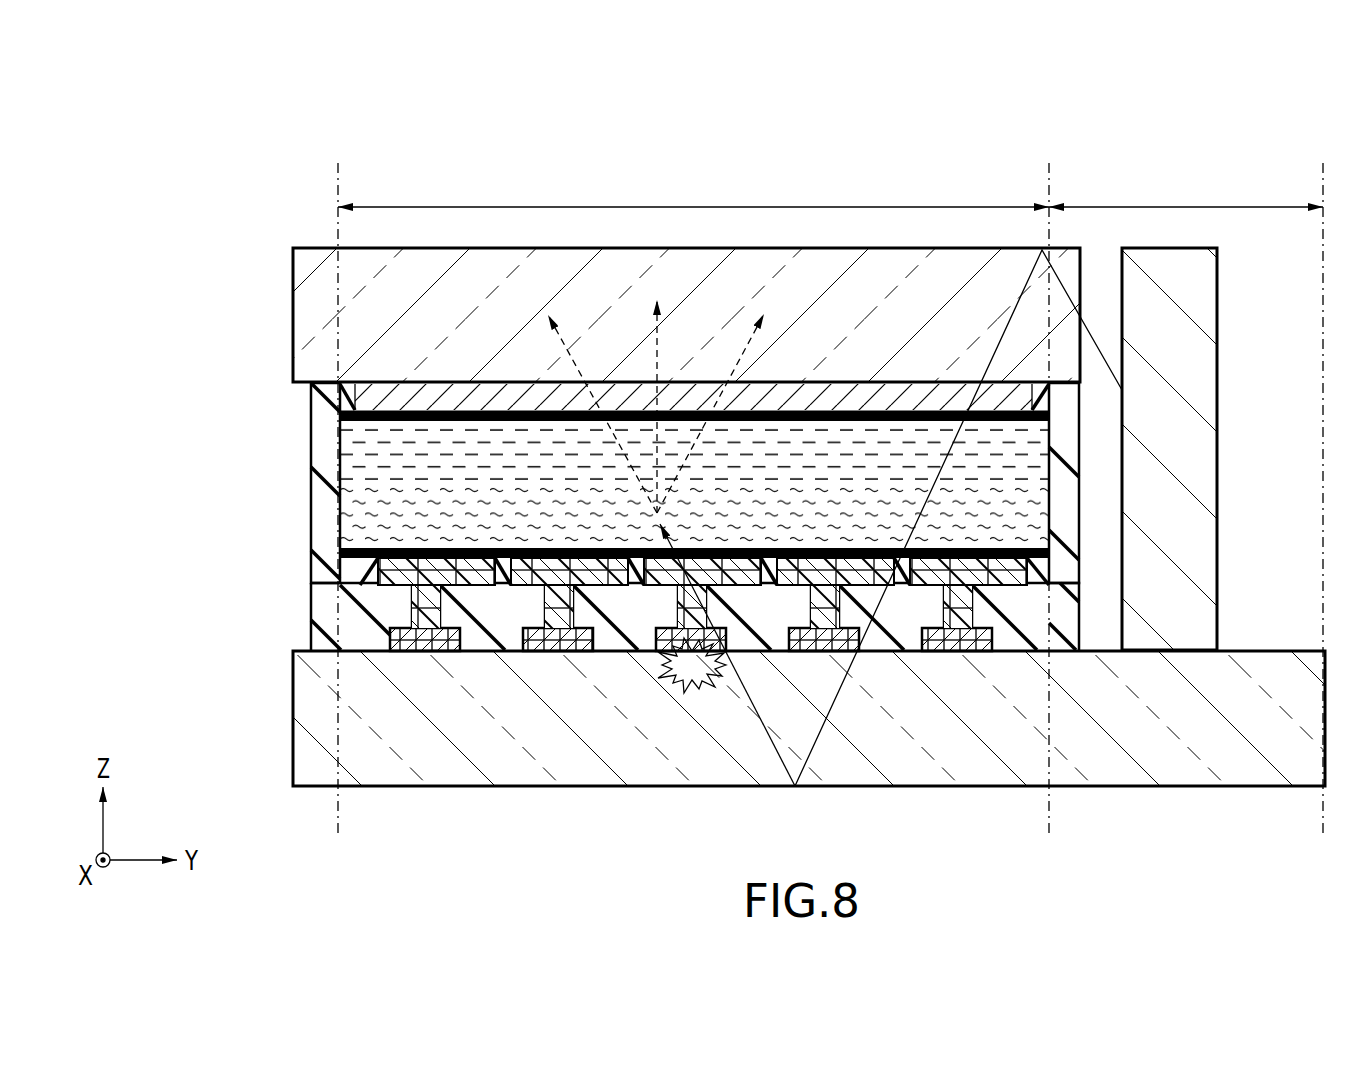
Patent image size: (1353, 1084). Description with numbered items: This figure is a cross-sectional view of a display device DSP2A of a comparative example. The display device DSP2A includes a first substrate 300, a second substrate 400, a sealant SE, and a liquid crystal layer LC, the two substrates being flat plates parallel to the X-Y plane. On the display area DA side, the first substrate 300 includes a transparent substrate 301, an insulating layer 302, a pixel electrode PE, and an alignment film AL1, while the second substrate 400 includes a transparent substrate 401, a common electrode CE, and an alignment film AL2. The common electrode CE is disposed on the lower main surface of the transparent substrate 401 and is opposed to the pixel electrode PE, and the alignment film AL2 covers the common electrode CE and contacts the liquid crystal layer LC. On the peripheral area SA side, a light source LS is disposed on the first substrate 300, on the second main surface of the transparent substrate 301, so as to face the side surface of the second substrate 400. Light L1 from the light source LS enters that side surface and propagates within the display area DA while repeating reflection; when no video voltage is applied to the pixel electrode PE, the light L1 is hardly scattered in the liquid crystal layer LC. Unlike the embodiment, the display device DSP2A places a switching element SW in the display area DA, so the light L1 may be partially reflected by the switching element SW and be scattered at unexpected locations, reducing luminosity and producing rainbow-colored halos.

The display device DSP2A is at (716, 459).
The second substrate 400 is at (593, 345).
The transparent substrate 401 is at (311, 321).
The common electrode CE is at (378, 398).
The alignment film AL2 is at (360, 416).
The liquid crystal layer LC is at (345, 469).
The sealant SE is at (327, 527).
The first substrate 300 is at (716, 693).
The alignment film AL1 is at (366, 562).
The insulating layer 302 is at (323, 608).
The switching element SW is at (411, 640).
The pixel electrode PE is at (478, 578).
The transparent substrate 301 is at (307, 730).
The light source LS is at (1203, 369).
The light L1 is at (1022, 300).
The display area DA is at (693, 500).
The peripheral area SA is at (1186, 500).